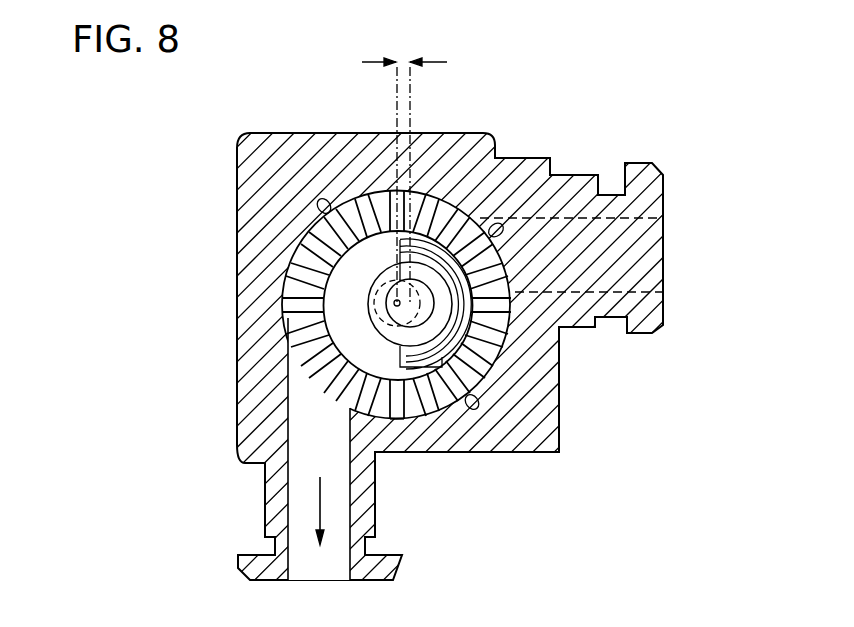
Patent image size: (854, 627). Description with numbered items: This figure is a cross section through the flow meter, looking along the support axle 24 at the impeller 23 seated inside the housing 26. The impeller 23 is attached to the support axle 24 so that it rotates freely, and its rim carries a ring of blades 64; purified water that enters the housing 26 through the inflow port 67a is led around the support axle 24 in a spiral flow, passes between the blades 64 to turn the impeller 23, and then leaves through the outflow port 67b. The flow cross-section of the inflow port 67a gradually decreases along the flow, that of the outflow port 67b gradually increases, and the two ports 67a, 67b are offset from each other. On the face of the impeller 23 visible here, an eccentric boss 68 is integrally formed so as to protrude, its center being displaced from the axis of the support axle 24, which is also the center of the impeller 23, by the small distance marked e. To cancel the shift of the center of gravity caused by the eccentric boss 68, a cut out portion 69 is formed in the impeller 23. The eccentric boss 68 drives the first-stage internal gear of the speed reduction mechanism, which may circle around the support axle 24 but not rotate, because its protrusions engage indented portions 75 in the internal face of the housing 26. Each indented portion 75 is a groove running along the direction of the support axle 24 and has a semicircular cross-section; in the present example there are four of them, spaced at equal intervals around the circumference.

The impeller 23 is at (365, 358).
The support axle 24 is at (394, 303).
The housing 26 is at (262, 133).
The blades 64 is at (340, 215).
The inflow port 67a is at (650, 263).
The outflow port 67b is at (302, 513).
The eccentric boss 68 is at (413, 405).
The cut out portion 69 is at (465, 368).
The indented portions 75 is at (322, 199).